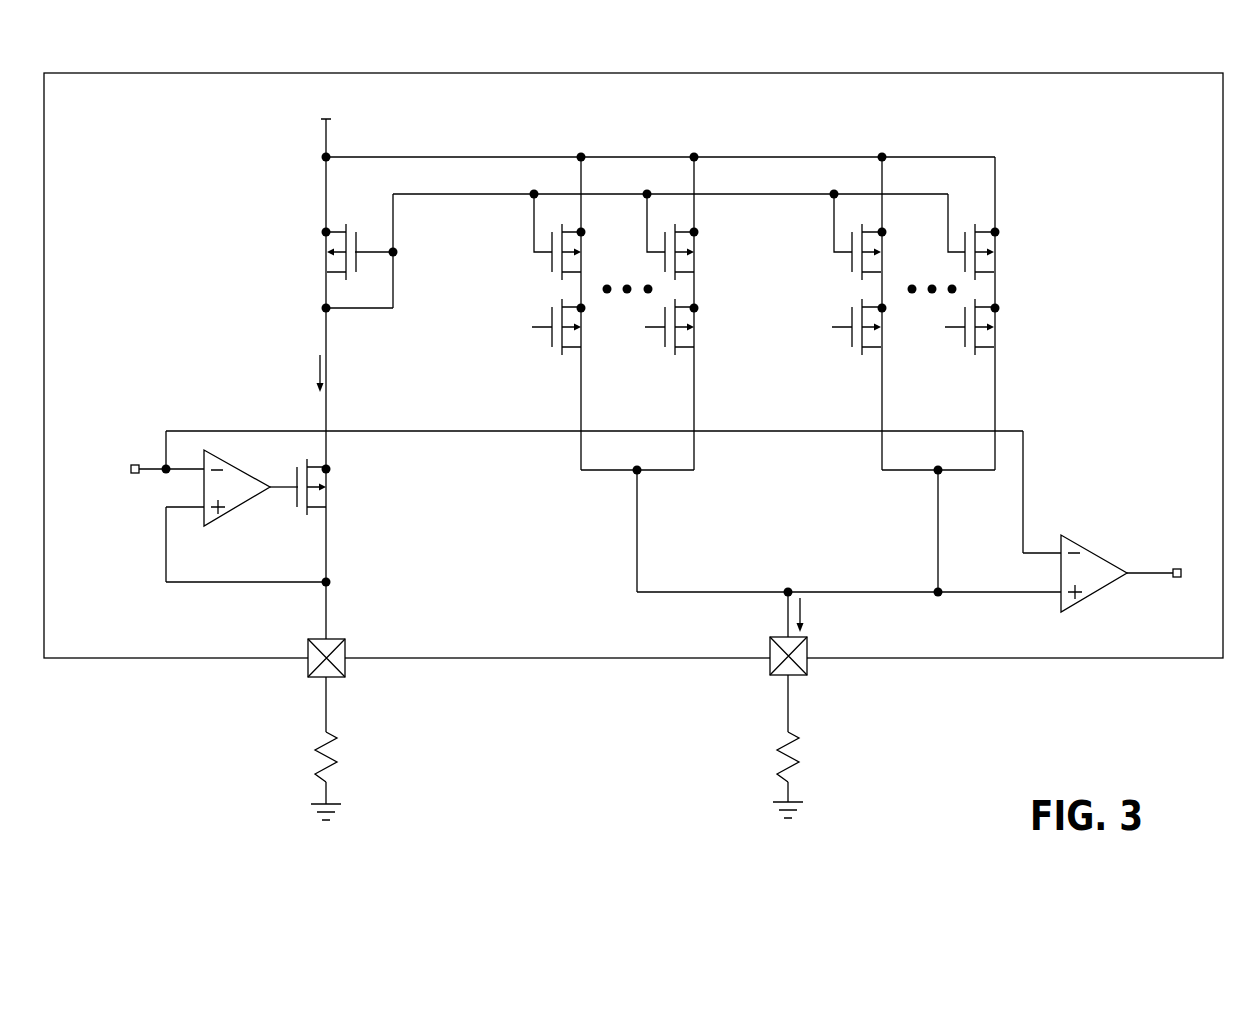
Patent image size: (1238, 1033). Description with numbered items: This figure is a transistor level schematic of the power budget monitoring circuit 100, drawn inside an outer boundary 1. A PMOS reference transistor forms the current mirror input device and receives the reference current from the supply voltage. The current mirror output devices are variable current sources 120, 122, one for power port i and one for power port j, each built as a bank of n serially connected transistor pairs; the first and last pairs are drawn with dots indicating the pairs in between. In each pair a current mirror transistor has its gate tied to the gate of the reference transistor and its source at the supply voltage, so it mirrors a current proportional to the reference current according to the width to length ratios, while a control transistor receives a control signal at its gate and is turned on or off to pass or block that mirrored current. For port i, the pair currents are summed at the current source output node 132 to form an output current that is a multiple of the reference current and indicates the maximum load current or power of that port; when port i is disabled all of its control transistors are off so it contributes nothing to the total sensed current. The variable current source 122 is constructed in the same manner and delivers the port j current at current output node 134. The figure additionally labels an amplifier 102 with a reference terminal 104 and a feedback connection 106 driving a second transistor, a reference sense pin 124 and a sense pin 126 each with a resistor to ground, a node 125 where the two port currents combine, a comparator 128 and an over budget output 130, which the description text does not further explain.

The integrated circuit 1 is at (1132, 73).
The power budget monitoring circuit 100 is at (186, 134).
The operational amplifier 102 is at (236, 462).
The reference voltage input terminal 104 is at (135, 474).
The feedback path 106 is at (166, 538).
The variable current source 120 is at (524, 385).
The variable current source 122 is at (840, 385).
The SPMRef pin 124 is at (346, 672).
The summing node 125 is at (790, 588).
The SPM pin 126 is at (808, 670).
The comparator 128 is at (1094, 594).
The OverBudget output terminal 130 is at (1177, 578).
The current source output node 132 is at (640, 474).
The current output node 134 is at (941, 474).